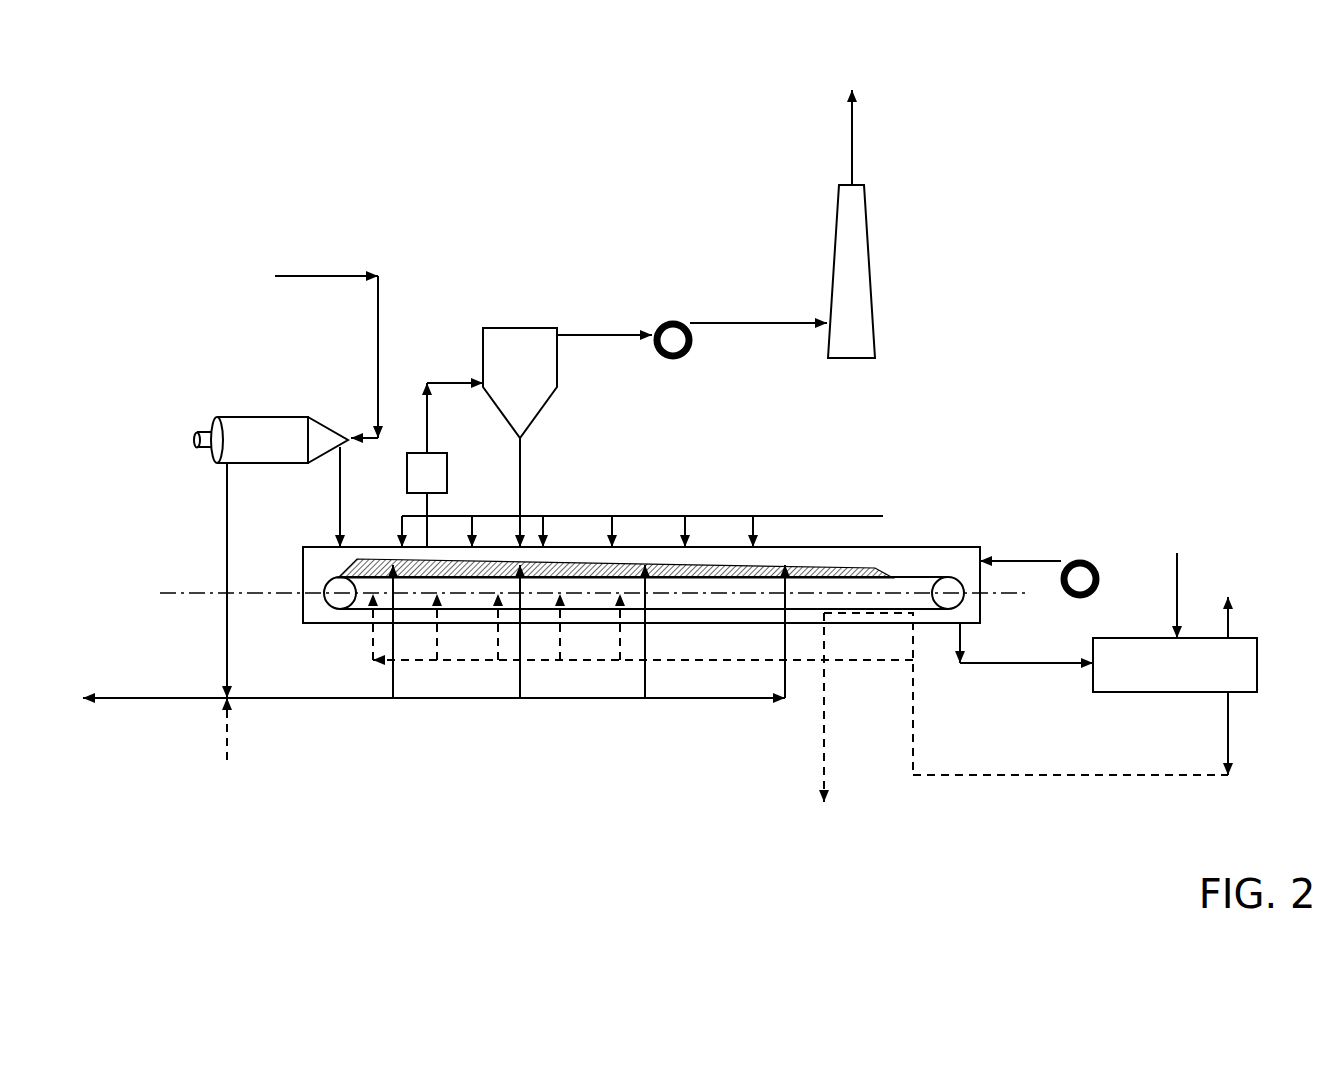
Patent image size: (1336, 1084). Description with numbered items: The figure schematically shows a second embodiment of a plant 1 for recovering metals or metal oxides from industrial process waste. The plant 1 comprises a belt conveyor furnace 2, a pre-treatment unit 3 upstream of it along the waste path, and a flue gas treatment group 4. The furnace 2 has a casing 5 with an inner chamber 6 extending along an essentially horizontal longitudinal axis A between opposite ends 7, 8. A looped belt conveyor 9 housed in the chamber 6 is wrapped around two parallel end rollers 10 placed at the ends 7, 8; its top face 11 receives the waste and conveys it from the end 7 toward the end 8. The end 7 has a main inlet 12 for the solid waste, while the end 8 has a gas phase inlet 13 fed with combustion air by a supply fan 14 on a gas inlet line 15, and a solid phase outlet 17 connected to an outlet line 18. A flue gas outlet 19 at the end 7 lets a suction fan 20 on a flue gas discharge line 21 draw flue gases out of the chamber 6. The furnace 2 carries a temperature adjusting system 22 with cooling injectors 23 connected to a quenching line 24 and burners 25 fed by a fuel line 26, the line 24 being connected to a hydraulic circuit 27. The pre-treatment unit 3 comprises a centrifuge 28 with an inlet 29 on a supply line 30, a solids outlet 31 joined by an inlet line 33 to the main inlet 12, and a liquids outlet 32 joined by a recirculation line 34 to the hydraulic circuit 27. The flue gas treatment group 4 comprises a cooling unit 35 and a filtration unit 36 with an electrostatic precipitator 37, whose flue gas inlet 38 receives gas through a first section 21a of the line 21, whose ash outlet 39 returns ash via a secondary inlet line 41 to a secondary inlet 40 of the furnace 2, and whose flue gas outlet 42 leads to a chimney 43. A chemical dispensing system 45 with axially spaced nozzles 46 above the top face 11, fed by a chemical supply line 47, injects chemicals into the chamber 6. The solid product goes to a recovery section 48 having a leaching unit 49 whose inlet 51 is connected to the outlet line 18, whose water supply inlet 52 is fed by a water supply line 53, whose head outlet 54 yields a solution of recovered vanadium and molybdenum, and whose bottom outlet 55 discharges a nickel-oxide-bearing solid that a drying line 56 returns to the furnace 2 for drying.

The plant 1 is at (1068, 285).
The belt conveyor furnace 2 is at (797, 560).
The pre-treatment unit 3 is at (188, 343).
The flue gas treatment group 4 is at (521, 300).
The casing 5 is at (712, 556).
The inner chamber 6 is at (900, 620).
The end 7 is at (303, 565).
The end 8 is at (985, 608).
The belt conveyor 9 is at (835, 565).
The end rollers 10 is at (328, 608).
The top face 11 is at (682, 565).
The main inlet 12 is at (343, 542).
The gas phase inlet 13 is at (965, 560).
The supply fan 14 is at (1097, 579).
The gas inlet line 15 is at (1048, 558).
The solid phase outlet 17 is at (958, 628).
The outlet line 18 is at (983, 665).
The flue gas outlet 19 is at (430, 545).
The suction fan 20 is at (673, 325).
The flue gas discharge line 21 is at (610, 333).
The first section of the flue gas discharge line 21a is at (383, 405).
The temperature adjusting system 22 is at (545, 722).
The cooling injectors 23 is at (640, 580).
The thermal moderating or quenching line 24 is at (660, 700).
The burners 25 is at (613, 612).
The fuel line 26 is at (790, 662).
The hydraulic circuit 27 is at (307, 700).
The centrifuge 28 is at (277, 425).
The inlet 29 is at (328, 435).
The supply line 30 is at (298, 272).
The solids outlet 31 is at (340, 457).
The liquids outlet 32 is at (225, 470).
The inlet line 33 is at (340, 493).
The recirculation line 34 is at (227, 633).
The cooling unit 35 is at (447, 469).
The filtration unit 36 is at (493, 340).
The electrostatic precipitator 37 is at (557, 372).
The flue gas inlet 38 is at (490, 373).
The ash outlet 39 is at (525, 438).
The secondary inlet 40 is at (542, 538).
The secondary inlet line 41 is at (521, 478).
The flue gas outlet 42 is at (560, 333).
The chimney 43 is at (858, 272).
The chemical dispensing system 45 is at (690, 516).
The nozzles 46 is at (742, 560).
The chemical supply line 47 is at (857, 512).
The recovery section 48 is at (1193, 693).
The leaching unit 49 is at (1205, 650).
The inlet 51 is at (1107, 668).
The water supply inlet 52 is at (1178, 652).
The water supply line 53 is at (1181, 562).
The head outlet 54 is at (1258, 655).
The bottom outlet 55 is at (1240, 690).
The drying line 56 is at (1018, 778).
The longitudinal axis A is at (160, 593).